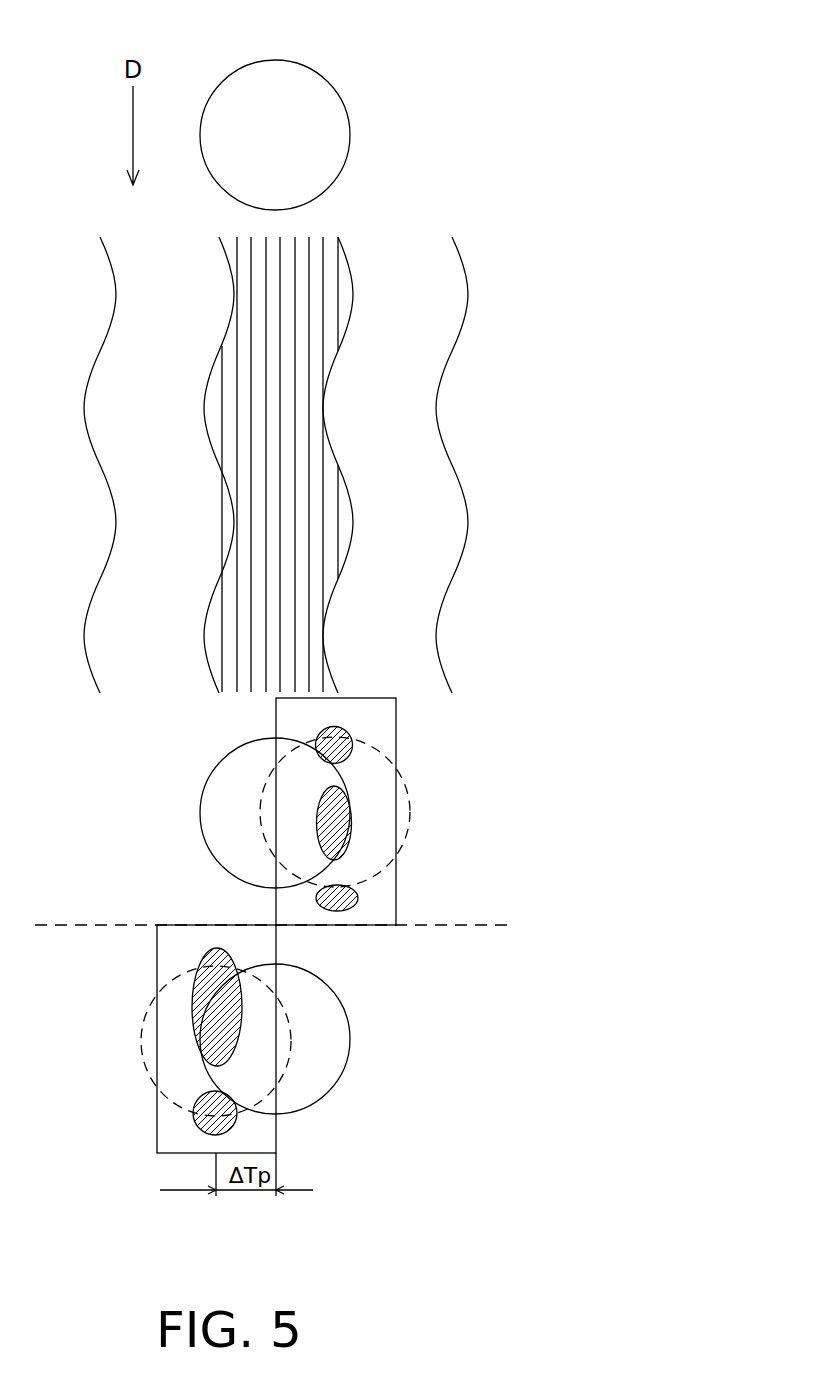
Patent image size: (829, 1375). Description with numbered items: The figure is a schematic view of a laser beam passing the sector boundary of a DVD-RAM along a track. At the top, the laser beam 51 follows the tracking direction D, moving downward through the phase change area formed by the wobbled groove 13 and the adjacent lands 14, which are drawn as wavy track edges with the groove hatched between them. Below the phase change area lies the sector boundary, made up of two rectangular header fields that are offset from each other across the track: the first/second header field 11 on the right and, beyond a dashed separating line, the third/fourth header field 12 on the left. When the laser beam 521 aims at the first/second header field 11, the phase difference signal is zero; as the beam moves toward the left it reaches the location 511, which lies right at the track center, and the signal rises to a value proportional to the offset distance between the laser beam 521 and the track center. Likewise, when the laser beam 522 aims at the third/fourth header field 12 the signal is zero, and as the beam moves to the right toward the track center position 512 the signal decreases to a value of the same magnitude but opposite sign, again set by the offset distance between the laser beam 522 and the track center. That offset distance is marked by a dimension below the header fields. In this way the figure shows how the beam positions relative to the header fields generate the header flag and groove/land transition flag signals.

The laser beam 51 is at (297, 72).
The land 14 is at (445, 310).
The wobbled groove 13 is at (228, 607).
The first/second header field 11 is at (382, 903).
The third/fourth header field 12 is at (192, 935).
The laser beam position at track center 511 is at (228, 783).
The laser beam aimed at first/second header field 521 is at (407, 807).
The laser beam position at track center 512 is at (338, 1030).
The laser beam aimed at third/fourth header field 522 is at (142, 1048).